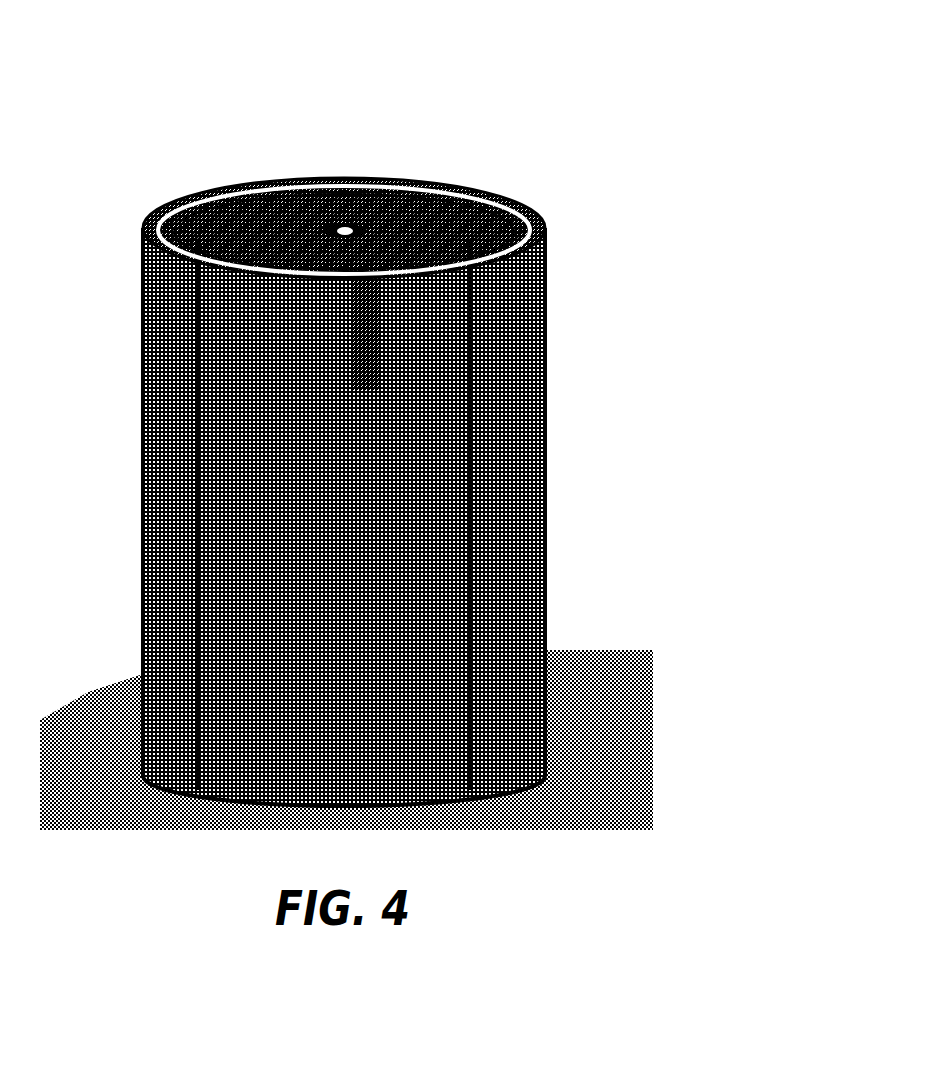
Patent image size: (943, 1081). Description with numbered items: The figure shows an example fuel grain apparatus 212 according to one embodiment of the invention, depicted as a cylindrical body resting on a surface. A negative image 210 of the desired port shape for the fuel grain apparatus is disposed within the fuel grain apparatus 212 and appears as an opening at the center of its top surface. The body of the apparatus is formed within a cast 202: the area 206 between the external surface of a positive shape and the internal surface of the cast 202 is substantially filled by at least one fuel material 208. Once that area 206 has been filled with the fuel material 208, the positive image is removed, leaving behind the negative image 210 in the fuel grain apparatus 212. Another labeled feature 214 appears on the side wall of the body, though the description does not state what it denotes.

The cast 202 is at (411, 468).
The area 206 is at (344, 166).
The fuel material 208 is at (283, 225).
The negative image 210 is at (345, 228).
The fuel grain apparatus 212 is at (388, 415).
The side wall feature 214 is at (378, 290).